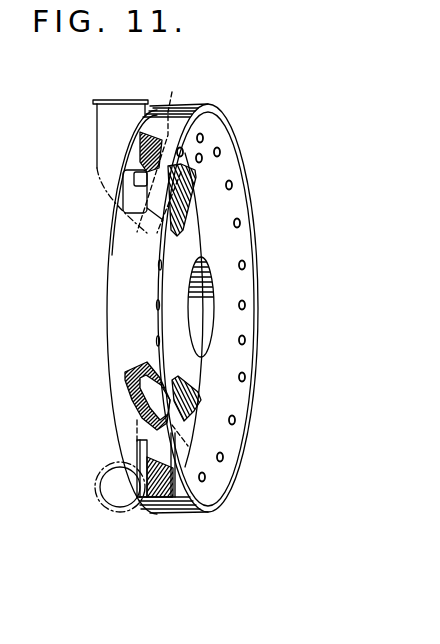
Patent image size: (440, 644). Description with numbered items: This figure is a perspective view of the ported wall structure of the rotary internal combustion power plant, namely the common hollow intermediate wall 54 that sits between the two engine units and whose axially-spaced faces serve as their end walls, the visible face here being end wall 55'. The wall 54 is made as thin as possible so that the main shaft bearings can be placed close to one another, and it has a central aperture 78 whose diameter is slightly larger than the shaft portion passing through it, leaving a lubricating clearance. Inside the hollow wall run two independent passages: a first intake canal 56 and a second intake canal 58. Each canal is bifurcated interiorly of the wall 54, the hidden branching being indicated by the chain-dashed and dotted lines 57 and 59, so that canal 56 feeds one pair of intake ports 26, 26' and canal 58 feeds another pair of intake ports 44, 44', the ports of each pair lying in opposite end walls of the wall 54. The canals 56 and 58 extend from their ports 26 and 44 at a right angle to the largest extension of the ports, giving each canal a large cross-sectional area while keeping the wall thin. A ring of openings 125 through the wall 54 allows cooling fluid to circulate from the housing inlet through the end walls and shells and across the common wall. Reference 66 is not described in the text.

The common hollow intermediate wall 54 is at (219, 92).
The end wall 55' is at (237, 309).
The first intake canal 56 is at (93, 118).
The second intake canal 58 is at (148, 505).
The chain-dashed line 59 is at (180, 189).
The intake port 26 is at (139, 175).
The intake port 26' is at (181, 204).
The holes 66 is at (221, 151).
The openings 125 is at (232, 184).
The central aperture 78 is at (205, 335).
The intake port 44 is at (147, 403).
The intake port 44' is at (225, 352).
The chain-dashed line 57 is at (150, 397).